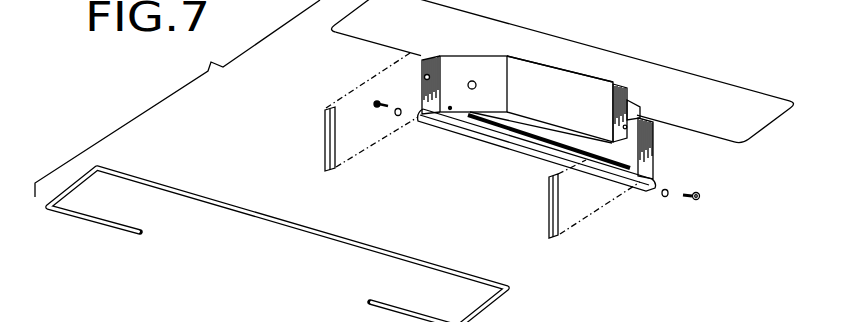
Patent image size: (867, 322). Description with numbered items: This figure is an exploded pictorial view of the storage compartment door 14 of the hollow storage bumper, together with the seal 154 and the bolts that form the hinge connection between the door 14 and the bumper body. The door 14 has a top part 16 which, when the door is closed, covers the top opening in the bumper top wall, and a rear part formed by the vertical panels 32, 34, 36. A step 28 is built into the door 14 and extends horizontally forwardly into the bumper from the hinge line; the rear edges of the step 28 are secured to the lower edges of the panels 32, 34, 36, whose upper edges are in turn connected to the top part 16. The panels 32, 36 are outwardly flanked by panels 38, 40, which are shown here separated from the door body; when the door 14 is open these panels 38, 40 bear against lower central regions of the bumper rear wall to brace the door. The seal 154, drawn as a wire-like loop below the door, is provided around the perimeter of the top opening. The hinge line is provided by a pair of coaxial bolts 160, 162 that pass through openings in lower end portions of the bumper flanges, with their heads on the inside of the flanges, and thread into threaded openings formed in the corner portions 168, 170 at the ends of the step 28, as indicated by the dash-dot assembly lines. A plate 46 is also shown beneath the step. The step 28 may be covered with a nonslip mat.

The door 14 is at (650, 54).
The top part 16 is at (550, 46).
The step 28 is at (507, 143).
The vertical panel 32 is at (455, 73).
The vertical panel 34 is at (574, 97).
The vertical panel 36 is at (626, 88).
The panel 38 is at (422, 95).
The panel 40 is at (653, 146).
The plate 46 is at (550, 228).
The seal 154 is at (267, 228).
The bolt 160 is at (386, 103).
The bolt 162 is at (683, 202).
The corner portion 168 is at (420, 128).
The corner portion 170 is at (662, 197).